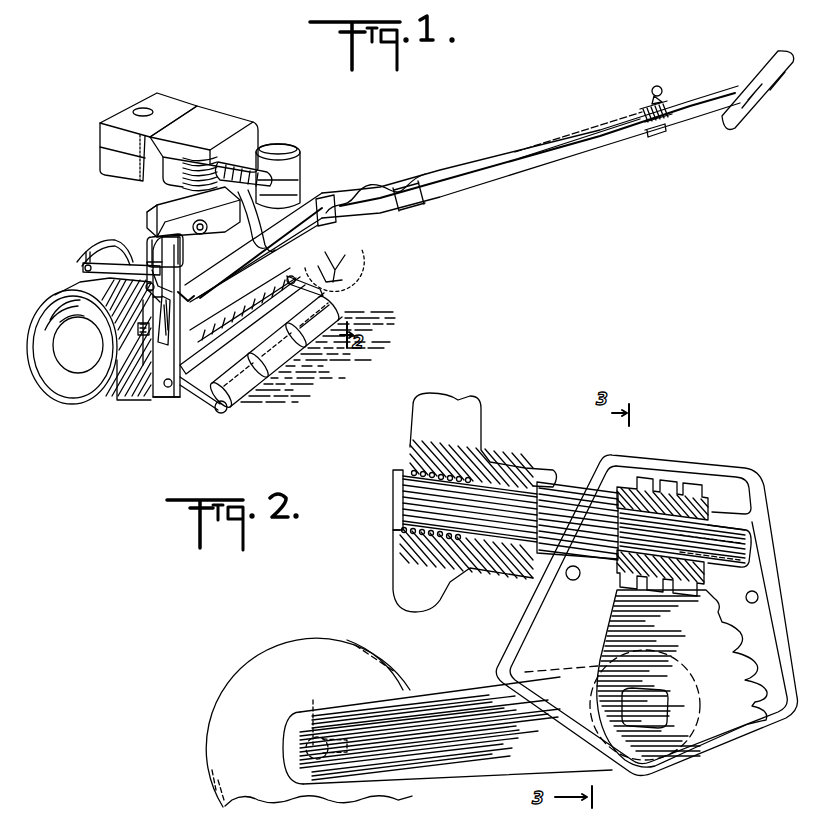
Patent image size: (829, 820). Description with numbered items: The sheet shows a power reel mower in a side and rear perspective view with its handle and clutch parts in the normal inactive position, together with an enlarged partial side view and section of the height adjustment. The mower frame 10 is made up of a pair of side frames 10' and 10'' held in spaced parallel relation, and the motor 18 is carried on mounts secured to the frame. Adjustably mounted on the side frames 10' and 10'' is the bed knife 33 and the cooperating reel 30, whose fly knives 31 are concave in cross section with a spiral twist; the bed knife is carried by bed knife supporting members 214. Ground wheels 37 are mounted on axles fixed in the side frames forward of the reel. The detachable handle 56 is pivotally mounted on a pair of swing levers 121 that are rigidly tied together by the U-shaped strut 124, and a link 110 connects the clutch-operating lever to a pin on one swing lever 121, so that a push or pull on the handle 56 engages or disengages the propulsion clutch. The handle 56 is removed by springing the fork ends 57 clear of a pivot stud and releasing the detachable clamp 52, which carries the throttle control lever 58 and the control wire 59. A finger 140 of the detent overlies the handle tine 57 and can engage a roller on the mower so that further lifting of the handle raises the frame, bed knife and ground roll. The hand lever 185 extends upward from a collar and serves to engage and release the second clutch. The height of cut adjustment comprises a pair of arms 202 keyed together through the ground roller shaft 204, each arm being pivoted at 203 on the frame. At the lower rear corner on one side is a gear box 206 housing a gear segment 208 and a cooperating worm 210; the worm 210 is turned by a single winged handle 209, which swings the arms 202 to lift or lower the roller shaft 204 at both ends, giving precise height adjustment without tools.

In FIG. 1, the mower frame 10 is at (101, 422).
In FIG. 1, the side frame 10' is at (153, 412).
In FIG. 1, the side frame 10'' is at (260, 229).
In FIG. 1, the motor 18 is at (233, 122).
In FIG. 1, the reel 30 is at (270, 308).
In FIG. 1, the fly knives 31 is at (240, 327).
In FIG. 1, the bed knife 33 is at (309, 310).
In FIG. 1, the ground wheels 37 is at (68, 284).
In FIG. 1, the detachable clamp 52 is at (660, 132).
In FIG. 1, the handle 56 is at (484, 151).
In FIG. 1, the fork ends 57 is at (340, 192).
In FIG. 1, the throttle control lever 58 is at (654, 88).
In FIG. 1, the control wire 59 is at (612, 126).
In FIG. 1, the link 110 is at (95, 264).
In FIG. 1, the swing levers 121 is at (160, 317).
In FIG. 1, the strut 124 is at (245, 207).
In FIG. 1, the finger 140 is at (180, 268).
In FIG. 1, the hand lever 185 is at (127, 240).
In FIG. 1, the arms 202 is at (327, 292).
In FIG. 2, the arms 202 is at (455, 690).
In FIG. 2, the pivot 203 is at (660, 702).
In FIG. 1, the ground roller shaft 204 is at (228, 412).
In FIG. 2, the ground roller shaft 204 is at (308, 714).
In FIG. 2, the gear box 206 is at (735, 740).
In FIG. 2, the gear segment 208 is at (610, 602).
In FIG. 1, the winged handle 209 is at (366, 262).
In FIG. 2, the winged handle 209 is at (475, 403).
In FIG. 2, the worm 210 is at (678, 480).
In FIG. 1, the bed knife supporting members 214 is at (120, 372).